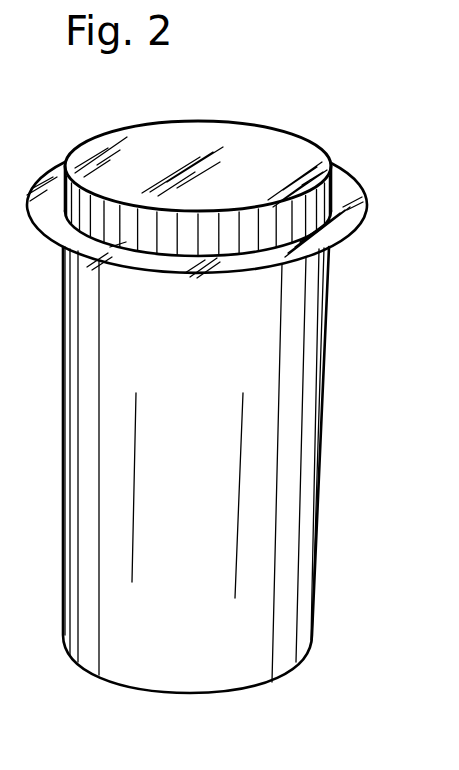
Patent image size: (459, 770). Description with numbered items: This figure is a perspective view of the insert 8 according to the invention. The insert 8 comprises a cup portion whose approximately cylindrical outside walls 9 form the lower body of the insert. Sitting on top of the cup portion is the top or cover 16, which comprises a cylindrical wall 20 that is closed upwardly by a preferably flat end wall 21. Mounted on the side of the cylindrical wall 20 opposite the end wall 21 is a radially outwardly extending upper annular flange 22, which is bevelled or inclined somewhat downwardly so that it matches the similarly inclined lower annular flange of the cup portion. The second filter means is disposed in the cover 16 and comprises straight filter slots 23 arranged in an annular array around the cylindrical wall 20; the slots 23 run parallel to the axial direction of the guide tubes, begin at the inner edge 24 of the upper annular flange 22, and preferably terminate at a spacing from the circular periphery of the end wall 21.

The insert 8 is at (323, 430).
The outside walls 9 is at (197, 429).
The top or cover 16 is at (246, 166).
The cylindrical wall 20 is at (108, 223).
The end wall 21 is at (203, 145).
The upper annular flange 22 is at (362, 199).
The filter slots 23 is at (300, 214).
The inner edge 24 is at (120, 250).